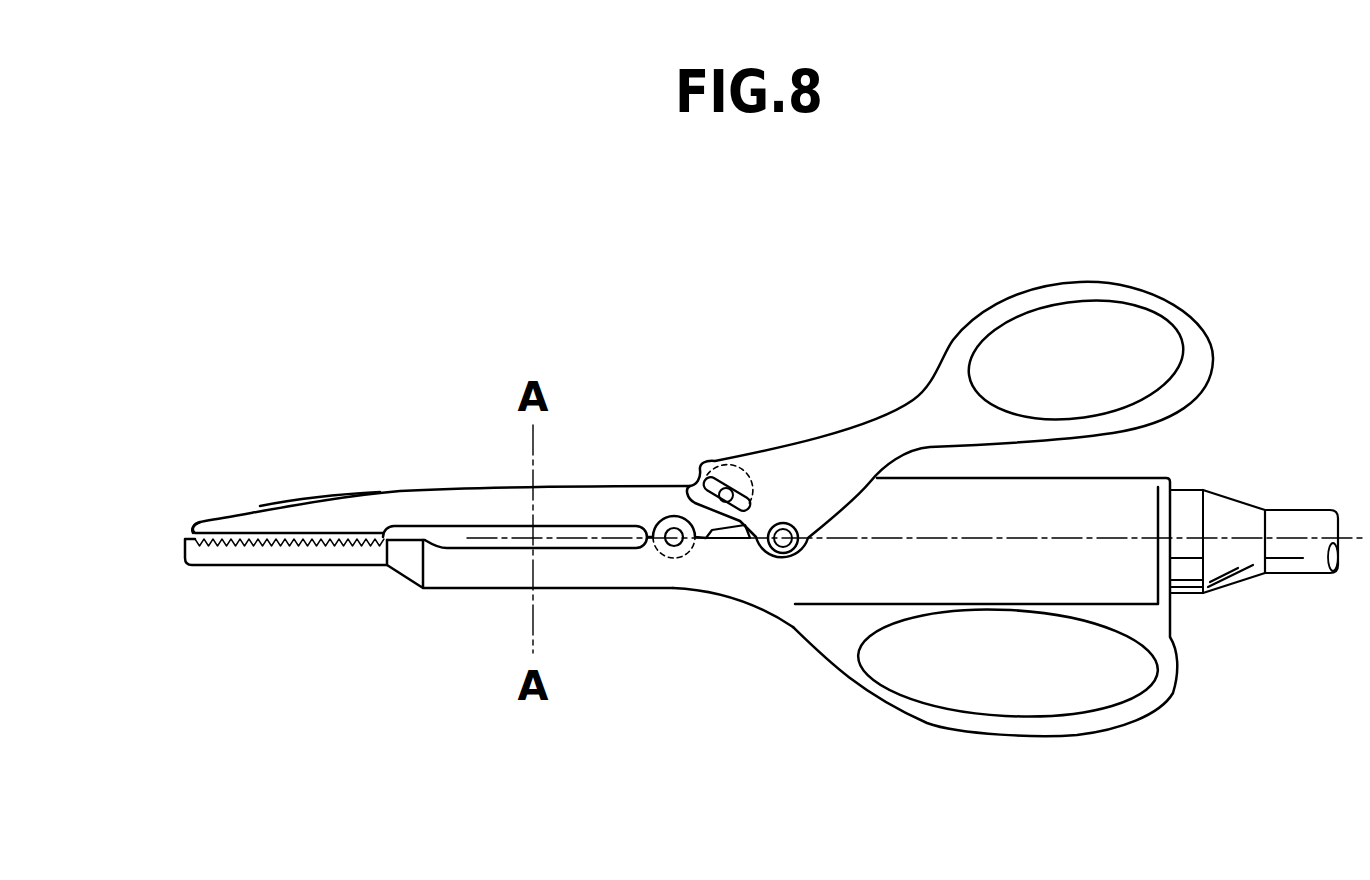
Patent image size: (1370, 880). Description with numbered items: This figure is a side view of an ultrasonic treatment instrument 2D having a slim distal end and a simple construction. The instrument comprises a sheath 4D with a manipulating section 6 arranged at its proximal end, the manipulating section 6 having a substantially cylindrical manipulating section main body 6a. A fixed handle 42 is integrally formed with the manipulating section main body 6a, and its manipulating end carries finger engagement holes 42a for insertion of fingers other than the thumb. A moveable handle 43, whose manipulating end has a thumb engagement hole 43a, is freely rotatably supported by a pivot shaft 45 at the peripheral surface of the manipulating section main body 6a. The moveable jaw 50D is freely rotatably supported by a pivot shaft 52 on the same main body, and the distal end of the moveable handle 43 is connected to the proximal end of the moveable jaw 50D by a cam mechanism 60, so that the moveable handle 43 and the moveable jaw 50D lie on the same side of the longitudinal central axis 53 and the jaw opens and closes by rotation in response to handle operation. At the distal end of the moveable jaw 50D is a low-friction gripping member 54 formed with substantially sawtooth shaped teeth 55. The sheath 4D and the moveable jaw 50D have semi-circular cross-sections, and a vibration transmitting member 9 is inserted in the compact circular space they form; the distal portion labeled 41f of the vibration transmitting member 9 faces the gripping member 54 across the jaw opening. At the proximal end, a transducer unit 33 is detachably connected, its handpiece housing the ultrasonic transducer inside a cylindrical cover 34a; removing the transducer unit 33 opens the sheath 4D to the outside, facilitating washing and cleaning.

The ultrasonic treatment instrument 2D is at (755, 362).
The moveable jaw 50D is at (367, 510).
The gripping member 54 is at (290, 513).
The sawtooth shaped teeth 55 is at (193, 535).
The moveable handle 43 is at (852, 448).
The thumb engagement hole 43a is at (1080, 320).
The cam mechanism 60 is at (700, 445).
The pivot shaft 45 is at (778, 553).
The pivot shaft 52 is at (676, 548).
The longitudinal central axis 53 is at (597, 542).
The manipulating section 6 is at (693, 715).
The sheath 4D is at (463, 577).
The lower jaw gripping surface 41f is at (286, 607).
The vibration transmitting member 9 is at (280, 553).
The fixed handle 42 is at (857, 683).
The finger engagement holes 42a is at (973, 690).
The manipulating section main body 6a is at (808, 623).
The transducer unit 33 is at (1207, 630).
The cylindrical cover 34a is at (1238, 573).